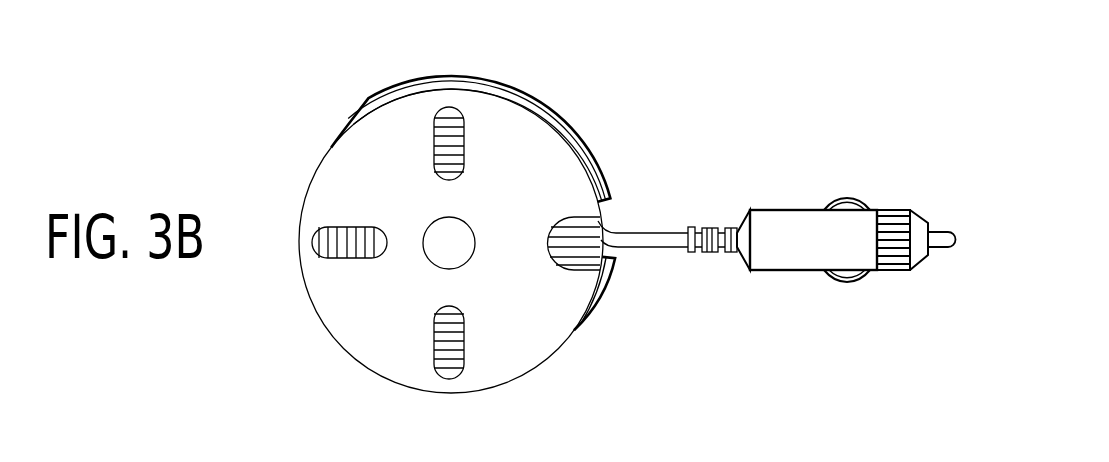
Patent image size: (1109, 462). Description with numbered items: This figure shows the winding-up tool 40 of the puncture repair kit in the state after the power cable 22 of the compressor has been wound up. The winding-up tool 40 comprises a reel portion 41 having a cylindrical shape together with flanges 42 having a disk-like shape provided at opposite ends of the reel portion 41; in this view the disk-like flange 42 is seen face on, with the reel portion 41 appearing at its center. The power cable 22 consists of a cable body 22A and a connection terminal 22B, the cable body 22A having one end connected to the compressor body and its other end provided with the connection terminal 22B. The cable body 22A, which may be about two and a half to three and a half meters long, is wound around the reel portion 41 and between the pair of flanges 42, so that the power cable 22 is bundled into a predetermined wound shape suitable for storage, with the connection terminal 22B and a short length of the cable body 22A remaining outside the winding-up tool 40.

The winding-up tool 40 is at (537, 90).
The reel portion 41 is at (437, 237).
The flanges 42 is at (530, 348).
The power cable 22 is at (818, 103).
The cable body 22A is at (618, 222).
The connection terminal 22B is at (790, 227).